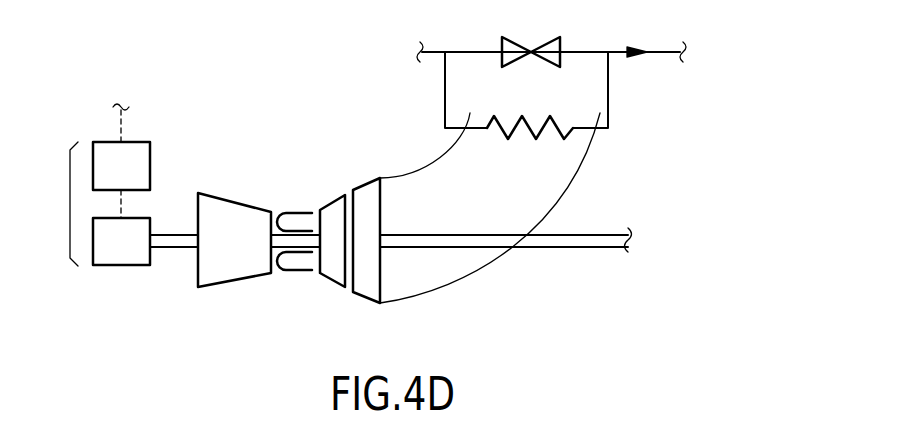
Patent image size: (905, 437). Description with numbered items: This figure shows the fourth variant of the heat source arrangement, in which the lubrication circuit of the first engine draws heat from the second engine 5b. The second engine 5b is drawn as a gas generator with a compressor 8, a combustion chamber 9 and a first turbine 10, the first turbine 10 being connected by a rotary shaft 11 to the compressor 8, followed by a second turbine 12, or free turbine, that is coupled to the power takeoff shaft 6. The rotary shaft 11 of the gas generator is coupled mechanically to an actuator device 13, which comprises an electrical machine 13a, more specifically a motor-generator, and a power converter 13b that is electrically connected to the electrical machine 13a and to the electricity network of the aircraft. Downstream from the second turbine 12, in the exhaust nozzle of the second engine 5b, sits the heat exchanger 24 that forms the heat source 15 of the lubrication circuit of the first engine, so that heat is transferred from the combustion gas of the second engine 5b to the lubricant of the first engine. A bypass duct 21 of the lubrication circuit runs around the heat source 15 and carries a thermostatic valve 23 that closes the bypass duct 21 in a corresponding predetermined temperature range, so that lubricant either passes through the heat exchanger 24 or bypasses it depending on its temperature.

The actuator device 13 is at (70, 204).
The electrical machine 13a is at (139, 251).
The power converter 13b is at (139, 174).
The compressor 8 is at (239, 253).
The rotary shaft 11 is at (280, 239).
The combustion chamber 9 is at (299, 213).
The first turbine 10 is at (326, 280).
The second turbine 12 is at (367, 187).
The power takeoff shaft 6 is at (597, 248).
The bypass duct 21 is at (465, 49).
The thermostatic valve 23 is at (530, 49).
The heat exchanger 24 is at (580, 118).
The heat source 15 is at (610, 142).
The second engine 5b is at (234, 316).